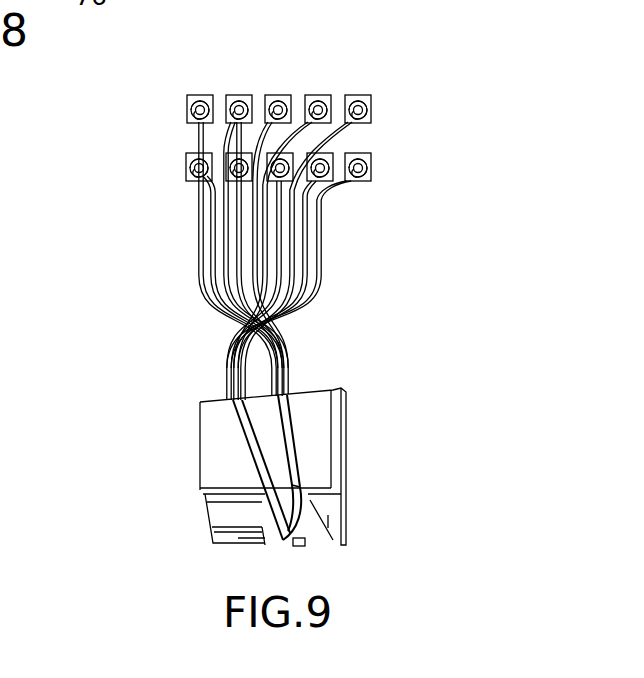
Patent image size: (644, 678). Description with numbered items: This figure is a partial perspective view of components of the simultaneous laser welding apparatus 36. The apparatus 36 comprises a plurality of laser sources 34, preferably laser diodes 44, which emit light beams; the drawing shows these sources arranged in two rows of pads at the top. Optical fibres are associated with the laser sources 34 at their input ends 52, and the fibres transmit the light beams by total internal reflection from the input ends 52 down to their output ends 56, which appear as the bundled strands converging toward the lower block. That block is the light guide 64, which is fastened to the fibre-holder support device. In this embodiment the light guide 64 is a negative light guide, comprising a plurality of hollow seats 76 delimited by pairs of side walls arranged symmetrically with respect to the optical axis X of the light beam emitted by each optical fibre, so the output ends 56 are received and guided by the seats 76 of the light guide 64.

The simultaneous laser welding apparatus 36 is at (253, 273).
The laser sources 34 is at (291, 61).
The laser diodes 44 is at (318, 97).
The input ends 52 is at (367, 178).
The output ends 56 is at (228, 398).
The light guide 64 is at (215, 458).
The hollow seats 76 is at (290, 485).
The optical axis X is at (305, 430).